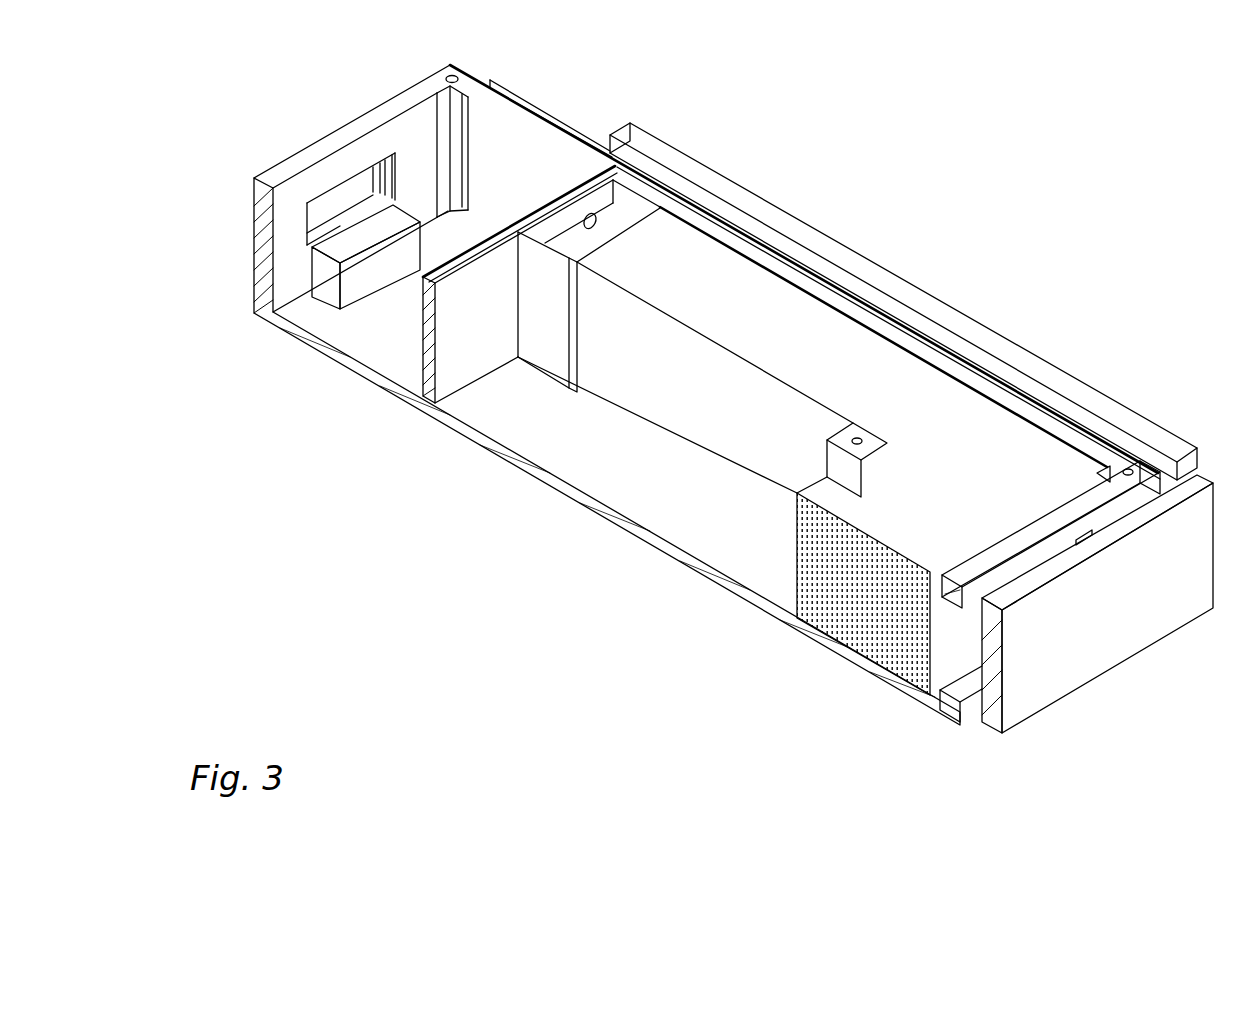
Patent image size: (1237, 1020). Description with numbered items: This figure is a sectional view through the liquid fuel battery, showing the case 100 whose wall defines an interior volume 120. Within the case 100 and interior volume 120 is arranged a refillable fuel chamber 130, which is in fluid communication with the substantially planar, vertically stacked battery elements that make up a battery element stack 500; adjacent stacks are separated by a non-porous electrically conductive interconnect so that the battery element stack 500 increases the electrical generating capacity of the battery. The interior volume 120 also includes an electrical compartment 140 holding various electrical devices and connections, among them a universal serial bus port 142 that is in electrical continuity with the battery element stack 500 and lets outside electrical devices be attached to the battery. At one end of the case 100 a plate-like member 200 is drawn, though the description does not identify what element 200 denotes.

The case 100 is at (685, 563).
The interior volume 120 is at (372, 404).
The refillable fuel chamber 130 is at (580, 453).
The electrical compartment 140 is at (452, 234).
The universal serial bus (USB) port 142 is at (338, 172).
The end cover plate 200 is at (1066, 692).
The battery element stack 500 is at (772, 318).